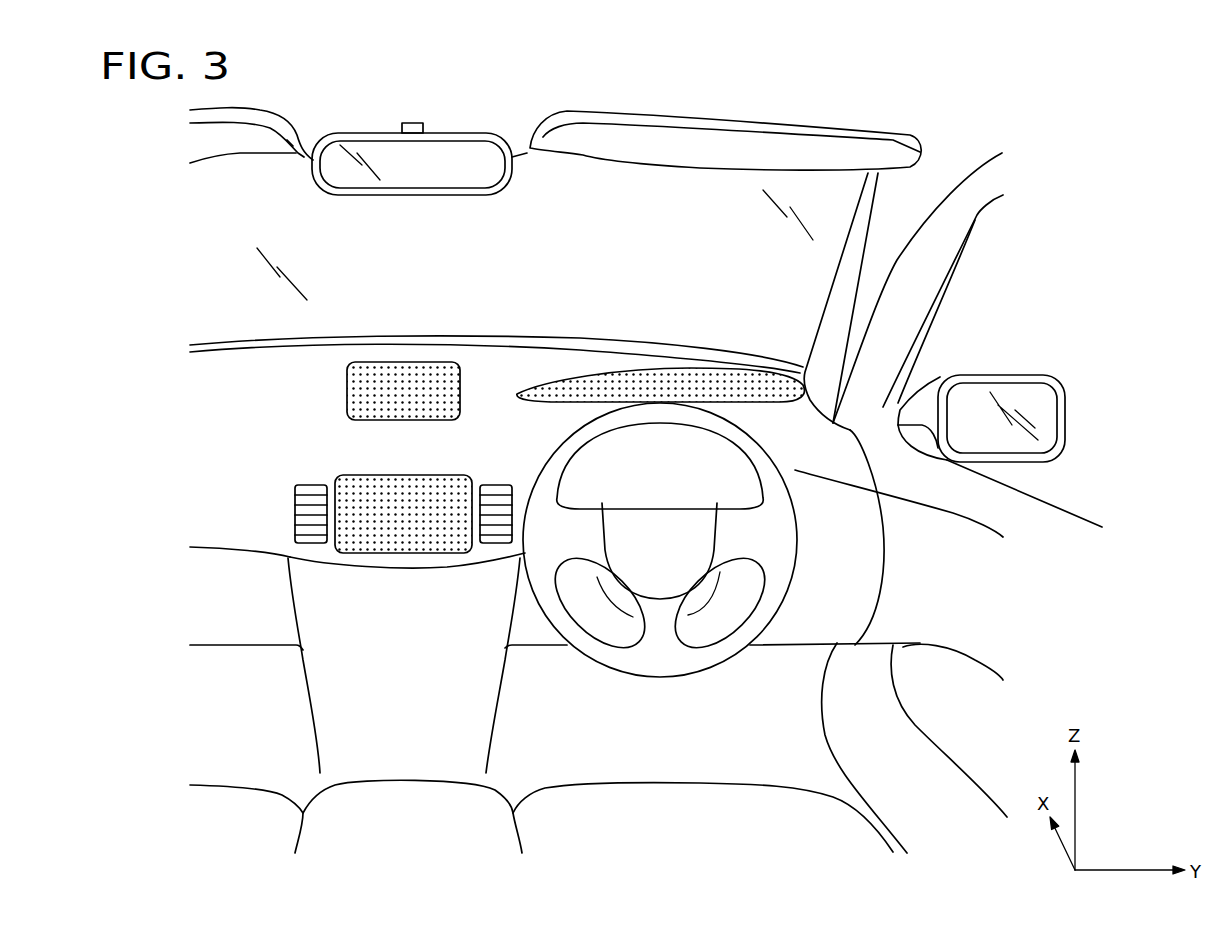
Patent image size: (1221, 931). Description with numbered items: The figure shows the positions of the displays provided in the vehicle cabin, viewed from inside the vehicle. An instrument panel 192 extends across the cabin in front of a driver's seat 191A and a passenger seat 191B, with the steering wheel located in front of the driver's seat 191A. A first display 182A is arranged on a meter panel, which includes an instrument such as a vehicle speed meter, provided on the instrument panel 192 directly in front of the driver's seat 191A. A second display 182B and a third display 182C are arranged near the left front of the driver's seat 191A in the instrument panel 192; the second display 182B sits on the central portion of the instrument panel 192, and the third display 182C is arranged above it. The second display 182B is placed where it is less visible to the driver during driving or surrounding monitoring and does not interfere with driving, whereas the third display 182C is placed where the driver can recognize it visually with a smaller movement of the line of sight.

The first display 182A is at (662, 377).
The second display 182B is at (405, 543).
The third display 182C is at (402, 373).
The instrument panel 192 is at (492, 373).
The driver's seat 191A is at (733, 863).
The passenger seat 191B is at (242, 863).